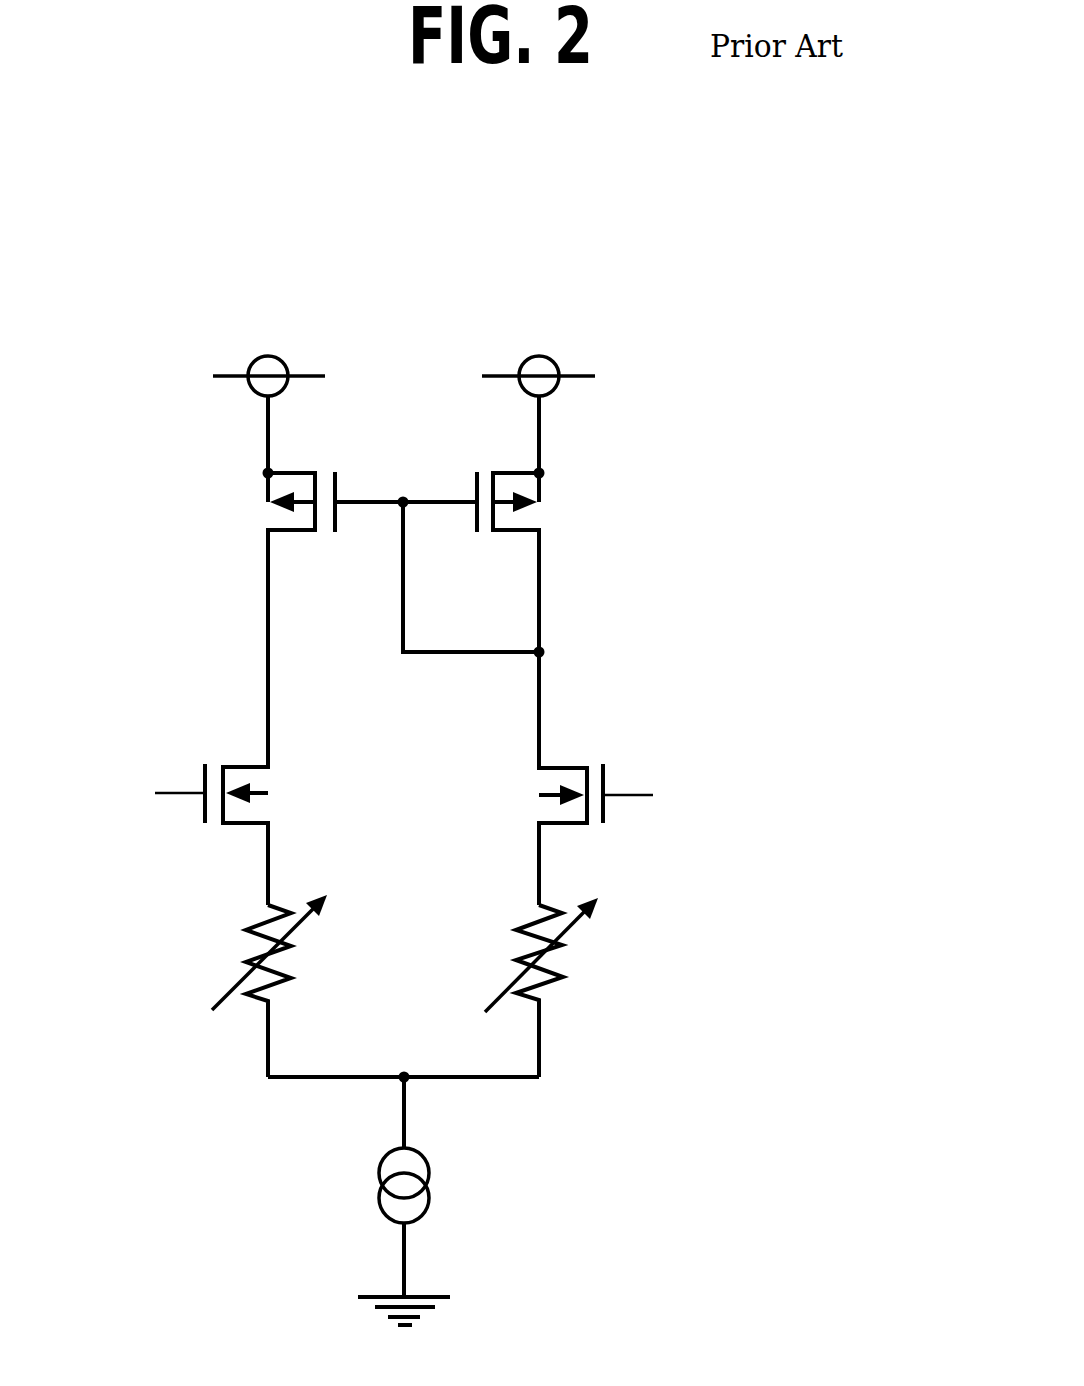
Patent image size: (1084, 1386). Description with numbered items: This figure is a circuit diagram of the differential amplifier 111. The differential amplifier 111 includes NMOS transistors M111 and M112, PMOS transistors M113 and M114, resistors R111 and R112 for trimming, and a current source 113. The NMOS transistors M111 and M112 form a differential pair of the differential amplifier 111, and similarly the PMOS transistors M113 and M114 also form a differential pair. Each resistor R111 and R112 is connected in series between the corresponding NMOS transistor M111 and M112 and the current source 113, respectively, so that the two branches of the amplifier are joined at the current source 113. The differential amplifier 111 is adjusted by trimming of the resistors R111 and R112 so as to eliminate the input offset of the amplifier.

The differential amplifier 111 is at (786, 282).
The NMOS transistor M111 is at (211, 812).
The NMOS transistor M112 is at (596, 813).
The PMOS transistor M113 is at (290, 514).
The PMOS transistor M114 is at (518, 514).
The resistor for trimming R111 is at (243, 986).
The resistor for trimming R112 is at (569, 987).
The current source 113 is at (430, 1175).